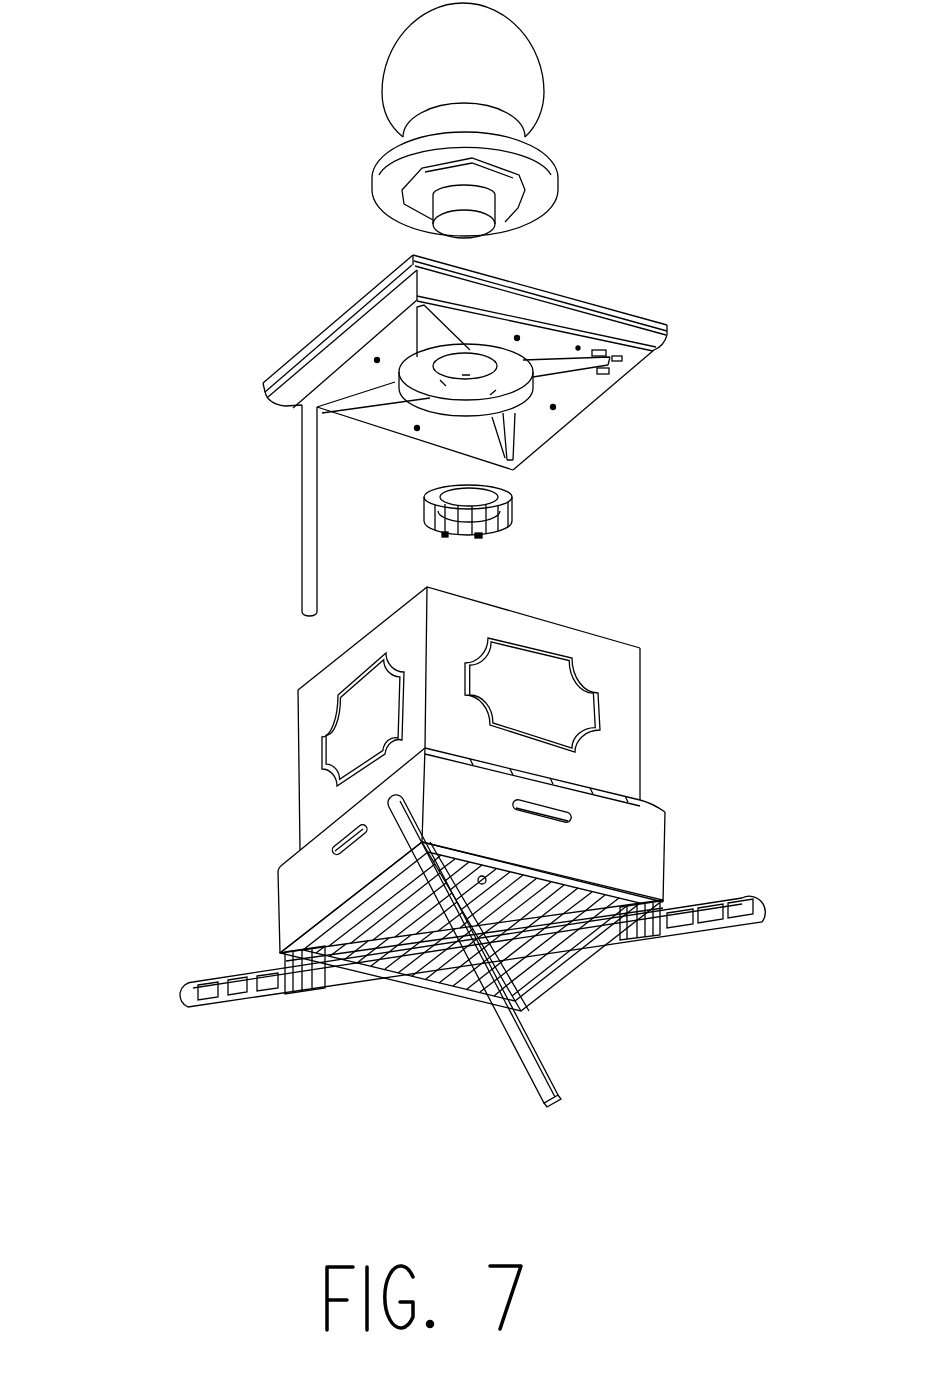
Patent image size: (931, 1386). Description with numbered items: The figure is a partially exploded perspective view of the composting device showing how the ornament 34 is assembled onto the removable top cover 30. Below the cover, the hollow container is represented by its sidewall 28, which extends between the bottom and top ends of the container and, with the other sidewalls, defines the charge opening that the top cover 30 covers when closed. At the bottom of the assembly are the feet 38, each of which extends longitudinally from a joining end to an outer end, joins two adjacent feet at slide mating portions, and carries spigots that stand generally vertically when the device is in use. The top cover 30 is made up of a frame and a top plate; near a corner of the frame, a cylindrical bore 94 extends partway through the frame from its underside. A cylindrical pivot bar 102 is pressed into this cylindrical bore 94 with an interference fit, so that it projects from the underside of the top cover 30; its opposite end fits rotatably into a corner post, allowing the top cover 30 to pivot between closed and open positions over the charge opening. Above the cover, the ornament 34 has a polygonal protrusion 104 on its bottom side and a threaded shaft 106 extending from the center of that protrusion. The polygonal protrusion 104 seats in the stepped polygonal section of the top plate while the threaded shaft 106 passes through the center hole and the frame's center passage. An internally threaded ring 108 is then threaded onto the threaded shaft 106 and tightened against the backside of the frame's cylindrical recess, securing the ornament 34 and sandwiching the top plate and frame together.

The ornament 34 is at (303, 81).
The polygonal protrusion 104 is at (586, 184).
The threaded shaft 106 is at (618, 250).
The removable top cover 30 is at (366, 362).
The cylindrical bore 94 is at (337, 395).
The cylindrical pivot bar 102 is at (192, 510).
The internally threaded ring 108 is at (515, 503).
The sidewall 28 is at (544, 799).
The feet 38 is at (496, 951).